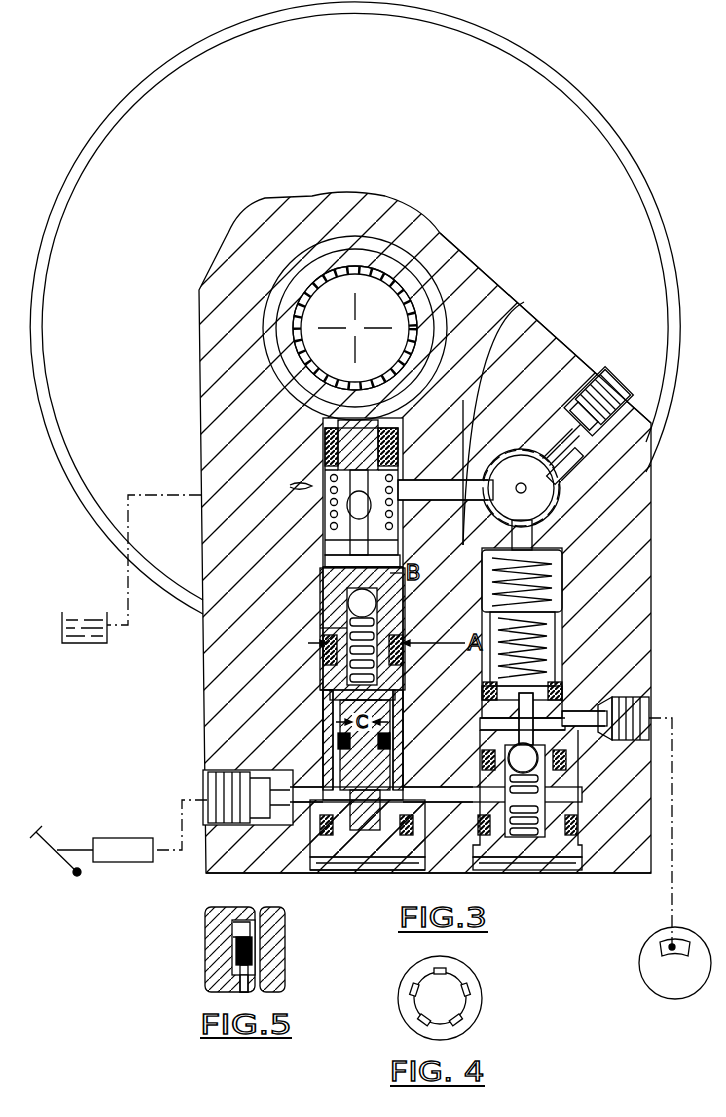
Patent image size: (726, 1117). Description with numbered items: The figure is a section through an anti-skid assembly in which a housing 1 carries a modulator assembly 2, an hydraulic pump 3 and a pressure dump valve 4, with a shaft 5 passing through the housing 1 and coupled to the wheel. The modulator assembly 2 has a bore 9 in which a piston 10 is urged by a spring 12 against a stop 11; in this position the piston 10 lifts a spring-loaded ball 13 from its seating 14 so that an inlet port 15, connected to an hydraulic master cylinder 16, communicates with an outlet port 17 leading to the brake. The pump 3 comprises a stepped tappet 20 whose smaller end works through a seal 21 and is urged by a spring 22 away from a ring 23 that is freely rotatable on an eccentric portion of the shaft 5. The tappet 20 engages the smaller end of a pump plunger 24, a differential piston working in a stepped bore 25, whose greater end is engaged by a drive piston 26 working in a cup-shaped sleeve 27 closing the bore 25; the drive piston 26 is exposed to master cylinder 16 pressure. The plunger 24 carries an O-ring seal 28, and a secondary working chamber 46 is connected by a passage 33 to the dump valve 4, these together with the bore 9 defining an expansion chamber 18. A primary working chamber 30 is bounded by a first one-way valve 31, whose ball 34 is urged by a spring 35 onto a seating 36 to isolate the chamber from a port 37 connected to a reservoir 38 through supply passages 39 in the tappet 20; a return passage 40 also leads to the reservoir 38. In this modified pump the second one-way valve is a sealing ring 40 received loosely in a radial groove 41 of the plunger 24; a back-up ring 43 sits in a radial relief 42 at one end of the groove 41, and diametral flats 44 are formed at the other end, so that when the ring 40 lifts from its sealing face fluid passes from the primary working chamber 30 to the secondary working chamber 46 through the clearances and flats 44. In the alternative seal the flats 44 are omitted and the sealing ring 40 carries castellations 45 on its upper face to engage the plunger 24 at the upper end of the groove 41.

In FIG. 3, the housing 1 is at (583, 150).
In FIG. 3, the modulator assembly 2 is at (545, 622).
In FIG. 3, the hydraulic pump 3 is at (330, 616).
In FIG. 3, the pressure dump valve 4 is at (527, 488).
In FIG. 3, the shaft 5 is at (382, 300).
In FIG. 3, the bore 9 is at (552, 600).
In FIG. 3, the piston 10 is at (552, 650).
In FIG. 3, the stop 11 is at (560, 755).
In FIG. 3, the spring 12 is at (560, 580).
In FIG. 3, the spring-loaded ball 13 is at (485, 835).
In FIG. 3, the seating 14 is at (555, 780).
In FIG. 3, the inlet port 15 is at (212, 790).
In FIG. 3, the hydraulic master cylinder 16 is at (133, 838).
In FIG. 3, the outlet port 17 is at (640, 712).
In FIG. 3, the expansion chamber 18 is at (552, 555).
In FIG. 3, the tappet 20 is at (345, 548).
In FIG. 3, the seal 21 is at (320, 428).
In FIG. 3, the spring 22 is at (338, 528).
In FIG. 3, the ring 23 is at (283, 325).
In FIG. 3, the pump plunger 24 is at (200, 600).
In FIG. 3, the stepped bore 25 is at (340, 725).
In FIG. 3, the drive piston 26 is at (428, 850).
In FIG. 3, the sleeve 27 is at (392, 866).
In FIG. 3, the 'O' ring seal 28 is at (336, 562).
In FIG. 3, the primary working chamber 30 is at (390, 720).
In FIG. 3, the first one-way valve 31 is at (400, 588).
In FIG. 3, the passage 33 is at (524, 302).
In FIG. 3, the ball 34 is at (405, 625).
In FIG. 3, the spring 35 is at (400, 690).
In FIG. 3, the seating 36 is at (325, 618).
In FIG. 3, the port 37 is at (320, 487).
In FIG. 3, the reservoir 38 is at (88, 643).
In FIG. 3, the supply passages 39 is at (326, 440).
In FIG. 3, the sealing ring 40 is at (325, 655).
In FIG. 4, the sealing ring 40 is at (412, 978).
In FIG. 5, the sealing ring 40 is at (236, 958).
In FIG. 3, the radial groove 41 is at (335, 640).
In FIG. 5, the radial groove 41 is at (236, 945).
In FIG. 3, the radial relief 42 is at (320, 700).
In FIG. 5, the radial relief 42 is at (240, 992).
In FIG. 3, the back-up ring 43 is at (325, 690).
In FIG. 5, the back-up ring 43 is at (262, 992).
In FIG. 3, the diametral flats 44 is at (320, 628).
In FIG. 4, the castellations 45 is at (468, 990).
In FIG. 5, the castellations 45 is at (236, 930).
In FIG. 3, the secondary working chamber 46 is at (405, 720).